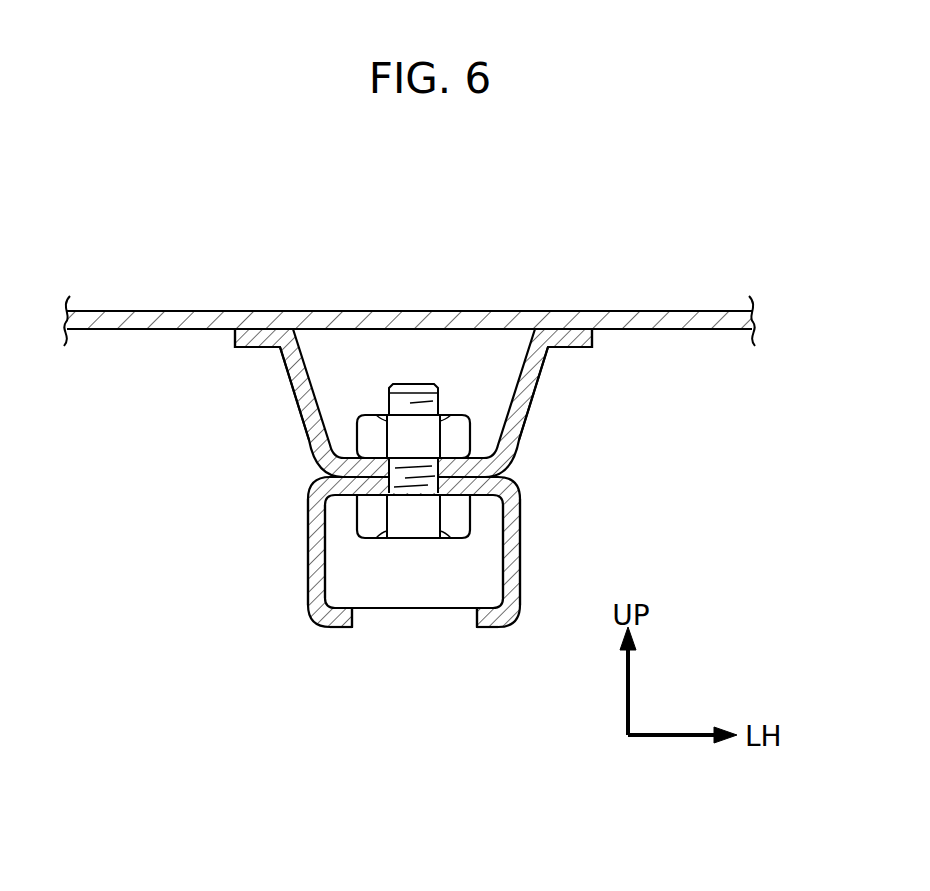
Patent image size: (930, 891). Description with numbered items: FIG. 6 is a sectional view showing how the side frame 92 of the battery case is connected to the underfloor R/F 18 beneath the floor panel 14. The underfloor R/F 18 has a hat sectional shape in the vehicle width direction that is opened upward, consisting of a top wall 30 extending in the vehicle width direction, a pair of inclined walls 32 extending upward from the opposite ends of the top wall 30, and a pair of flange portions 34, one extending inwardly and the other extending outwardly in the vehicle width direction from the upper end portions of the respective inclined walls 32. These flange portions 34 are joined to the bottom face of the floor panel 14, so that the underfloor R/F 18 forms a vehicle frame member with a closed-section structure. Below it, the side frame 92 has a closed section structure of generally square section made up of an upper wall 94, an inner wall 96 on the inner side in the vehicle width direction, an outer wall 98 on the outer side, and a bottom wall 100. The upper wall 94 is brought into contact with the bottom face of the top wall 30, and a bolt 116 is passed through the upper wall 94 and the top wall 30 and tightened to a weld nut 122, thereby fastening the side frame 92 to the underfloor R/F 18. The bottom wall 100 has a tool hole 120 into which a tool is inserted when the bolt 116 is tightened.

The floor panel 14 is at (160, 318).
The underfloor R/F 18 is at (298, 424).
The top wall 30 is at (478, 462).
The inclined walls 32 is at (303, 399).
The flange portions 34 is at (250, 337).
The side frame 92 is at (522, 518).
The upper wall 94 is at (345, 488).
The inner wall 96 is at (316, 583).
The outer wall 98 is at (513, 568).
The bottom wall 100 is at (345, 628).
The bolt 116 is at (368, 524).
The tool hole 120 is at (432, 616).
The weld nut 122 is at (373, 428).